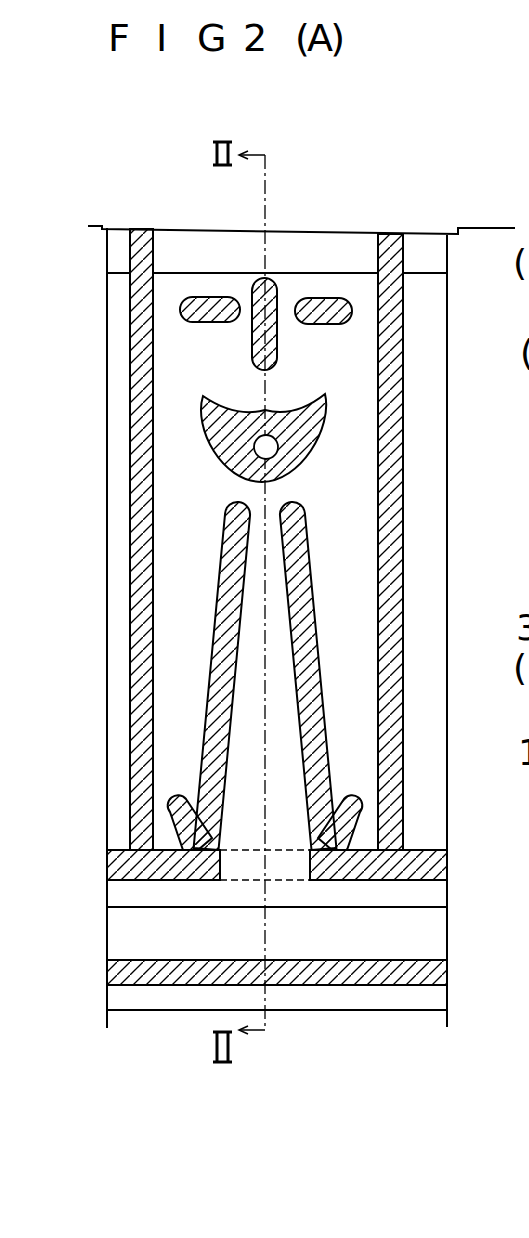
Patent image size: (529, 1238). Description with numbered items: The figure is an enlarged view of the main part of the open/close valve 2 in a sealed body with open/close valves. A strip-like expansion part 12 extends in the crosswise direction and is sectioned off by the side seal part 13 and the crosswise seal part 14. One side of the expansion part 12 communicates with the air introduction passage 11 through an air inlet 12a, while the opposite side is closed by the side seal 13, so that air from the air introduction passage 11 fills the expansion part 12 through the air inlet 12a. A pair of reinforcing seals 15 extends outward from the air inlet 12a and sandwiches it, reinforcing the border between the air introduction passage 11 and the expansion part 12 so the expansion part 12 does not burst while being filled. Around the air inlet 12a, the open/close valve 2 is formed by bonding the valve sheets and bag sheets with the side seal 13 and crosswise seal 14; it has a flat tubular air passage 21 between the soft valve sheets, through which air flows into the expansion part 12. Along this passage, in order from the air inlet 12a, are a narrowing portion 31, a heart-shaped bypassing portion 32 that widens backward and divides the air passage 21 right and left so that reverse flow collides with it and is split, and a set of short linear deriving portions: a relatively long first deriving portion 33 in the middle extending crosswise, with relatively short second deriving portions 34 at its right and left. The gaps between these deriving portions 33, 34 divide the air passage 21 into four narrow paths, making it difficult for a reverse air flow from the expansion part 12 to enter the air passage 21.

The open/close valve 2 is at (175, 540).
The air introduction passage 11 is at (332, 940).
The expansion part 12 is at (290, 240).
The air inlet 12a is at (245, 880).
The side seal part 13 is at (432, 856).
The crosswise seal part 14 is at (385, 575).
The reinforcing seal 15 is at (352, 800).
The air passage 21 is at (185, 428).
The narrowing portion 31 is at (315, 667).
The bypassing portion 32 is at (322, 419).
The first deriving portion 33 is at (258, 348).
The second deriving portion 34 is at (210, 308).